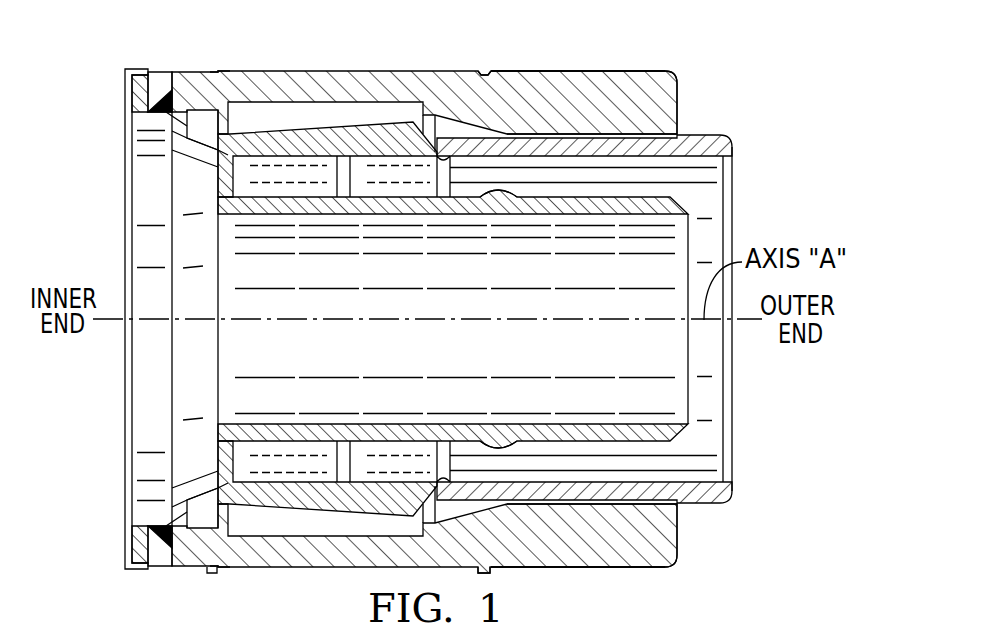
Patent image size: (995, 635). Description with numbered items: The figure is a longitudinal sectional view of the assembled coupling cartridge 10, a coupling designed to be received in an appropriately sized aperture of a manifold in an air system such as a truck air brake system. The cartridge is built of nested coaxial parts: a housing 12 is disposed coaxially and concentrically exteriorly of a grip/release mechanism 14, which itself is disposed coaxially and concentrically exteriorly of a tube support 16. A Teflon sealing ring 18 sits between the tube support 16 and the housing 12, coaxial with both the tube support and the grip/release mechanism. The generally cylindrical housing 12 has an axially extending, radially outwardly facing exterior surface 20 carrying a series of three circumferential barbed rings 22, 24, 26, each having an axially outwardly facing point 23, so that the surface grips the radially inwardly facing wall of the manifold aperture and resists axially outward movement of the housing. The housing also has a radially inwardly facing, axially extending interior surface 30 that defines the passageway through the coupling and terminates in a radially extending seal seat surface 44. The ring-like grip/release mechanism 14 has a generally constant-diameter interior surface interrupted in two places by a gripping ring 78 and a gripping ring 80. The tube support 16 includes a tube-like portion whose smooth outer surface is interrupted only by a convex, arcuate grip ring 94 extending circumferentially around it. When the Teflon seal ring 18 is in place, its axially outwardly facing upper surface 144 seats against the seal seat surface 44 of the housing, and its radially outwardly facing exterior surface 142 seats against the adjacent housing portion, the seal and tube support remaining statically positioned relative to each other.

The coupling cartridge 10 is at (798, 177).
The housing 12 is at (694, 101).
The grip/release mechanism 14 is at (748, 128).
The tube support 16 is at (694, 438).
The Teflon sealing ring 18 is at (160, 565).
The radially outwardly facing exterior surface 20 is at (560, 70).
The barbed ring 22 is at (481, 69).
The axially outwardly facing point 23 is at (490, 70).
The barbed ring 24 is at (221, 69).
The barbed ring 26 is at (202, 70).
The radially inwardly facing interior surface 30 is at (296, 108).
The seal seat surface 44 is at (181, 553).
The gripping ring 78 is at (441, 448).
The gripping ring 80 is at (342, 478).
The grip ring 94 is at (520, 452).
The radially outwardly facing exterior surface 142 is at (166, 86).
The axially outwardly facing upper surface 144 is at (206, 572).